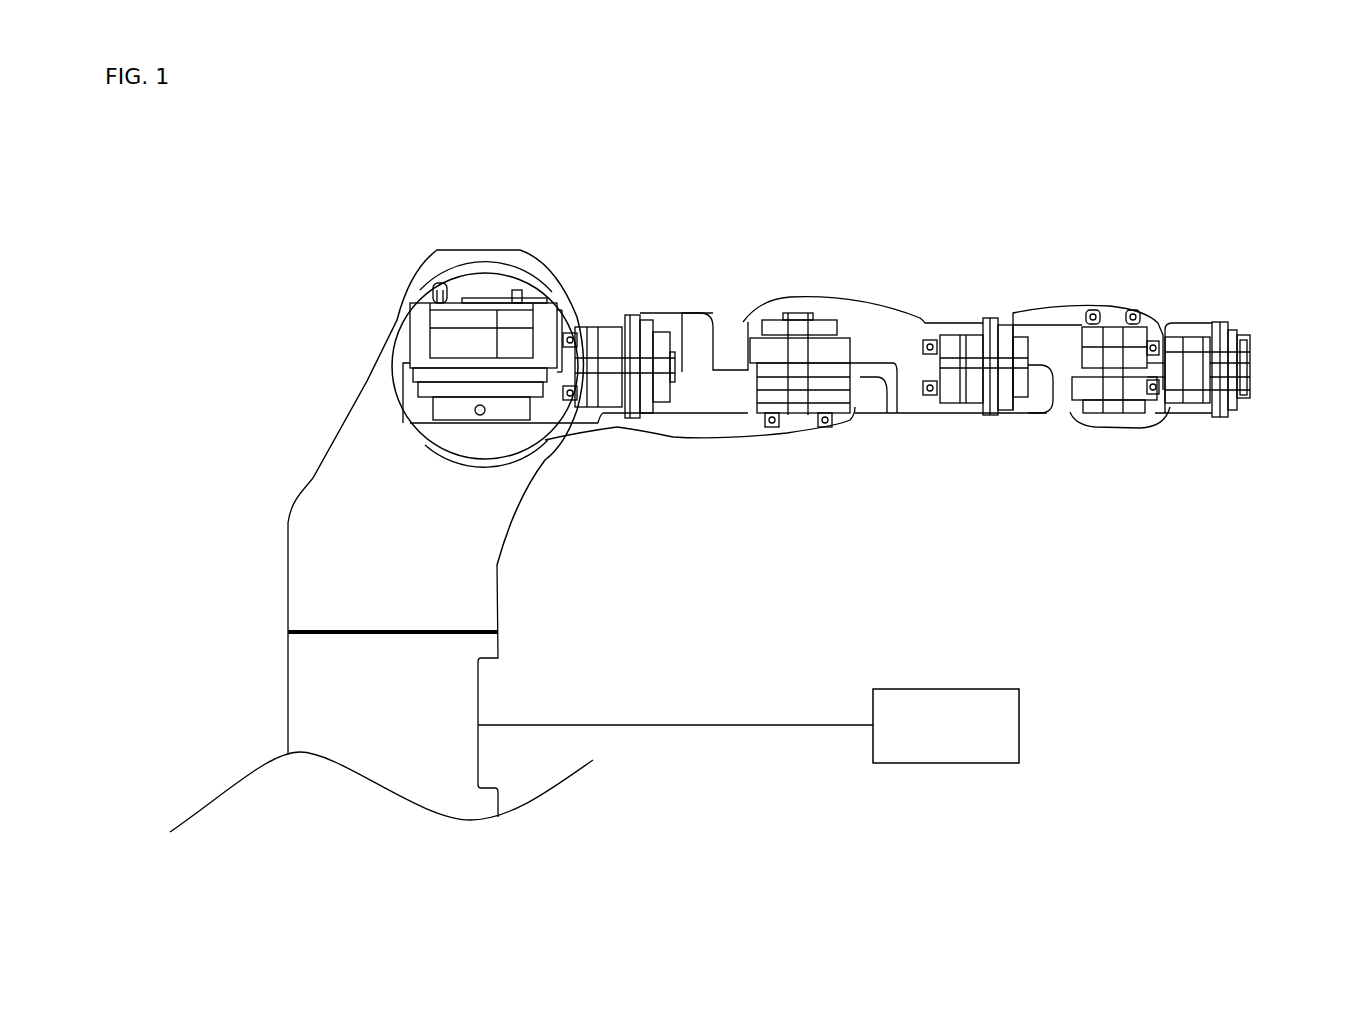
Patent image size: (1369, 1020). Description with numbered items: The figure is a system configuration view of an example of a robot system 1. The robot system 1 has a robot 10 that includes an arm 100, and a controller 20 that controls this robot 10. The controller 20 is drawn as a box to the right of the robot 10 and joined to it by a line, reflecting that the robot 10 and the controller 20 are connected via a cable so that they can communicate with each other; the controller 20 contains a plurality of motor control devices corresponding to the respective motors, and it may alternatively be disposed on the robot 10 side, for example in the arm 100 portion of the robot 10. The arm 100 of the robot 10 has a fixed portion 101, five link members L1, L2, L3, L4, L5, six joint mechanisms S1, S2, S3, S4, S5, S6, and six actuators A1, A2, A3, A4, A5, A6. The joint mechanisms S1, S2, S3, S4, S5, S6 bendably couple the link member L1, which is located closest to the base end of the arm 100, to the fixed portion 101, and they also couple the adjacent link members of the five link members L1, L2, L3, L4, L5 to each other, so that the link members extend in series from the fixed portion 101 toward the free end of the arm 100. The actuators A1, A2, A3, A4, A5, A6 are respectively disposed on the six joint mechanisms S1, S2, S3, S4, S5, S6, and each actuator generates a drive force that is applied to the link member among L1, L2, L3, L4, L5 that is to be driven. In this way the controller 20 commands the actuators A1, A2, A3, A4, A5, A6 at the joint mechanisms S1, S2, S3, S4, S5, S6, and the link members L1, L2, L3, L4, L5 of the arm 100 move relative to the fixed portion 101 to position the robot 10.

The robot system 1 is at (1281, 124).
The robot 10 is at (407, 227).
The controller 20 is at (1019, 722).
The arm 100 is at (309, 452).
The fixed portion 101 is at (510, 280).
The link member L1 is at (598, 421).
The link member L2 is at (728, 438).
The link member L3 is at (923, 413).
The link member L4 is at (1070, 307).
The link member L5 is at (1195, 325).
The actuator A1 is at (430, 343).
The actuator A2 is at (633, 418).
The actuator A3 is at (790, 420).
The actuator A4 is at (980, 413).
The actuator A5 is at (1130, 417).
The actuator A6 is at (1223, 413).
The joint mechanism S1 is at (401, 378).
The joint mechanism S2 is at (644, 316).
The joint mechanism S3 is at (851, 345).
The joint mechanism S4 is at (1001, 314).
The joint mechanism S5 is at (1076, 369).
The joint mechanism S6 is at (1244, 324).